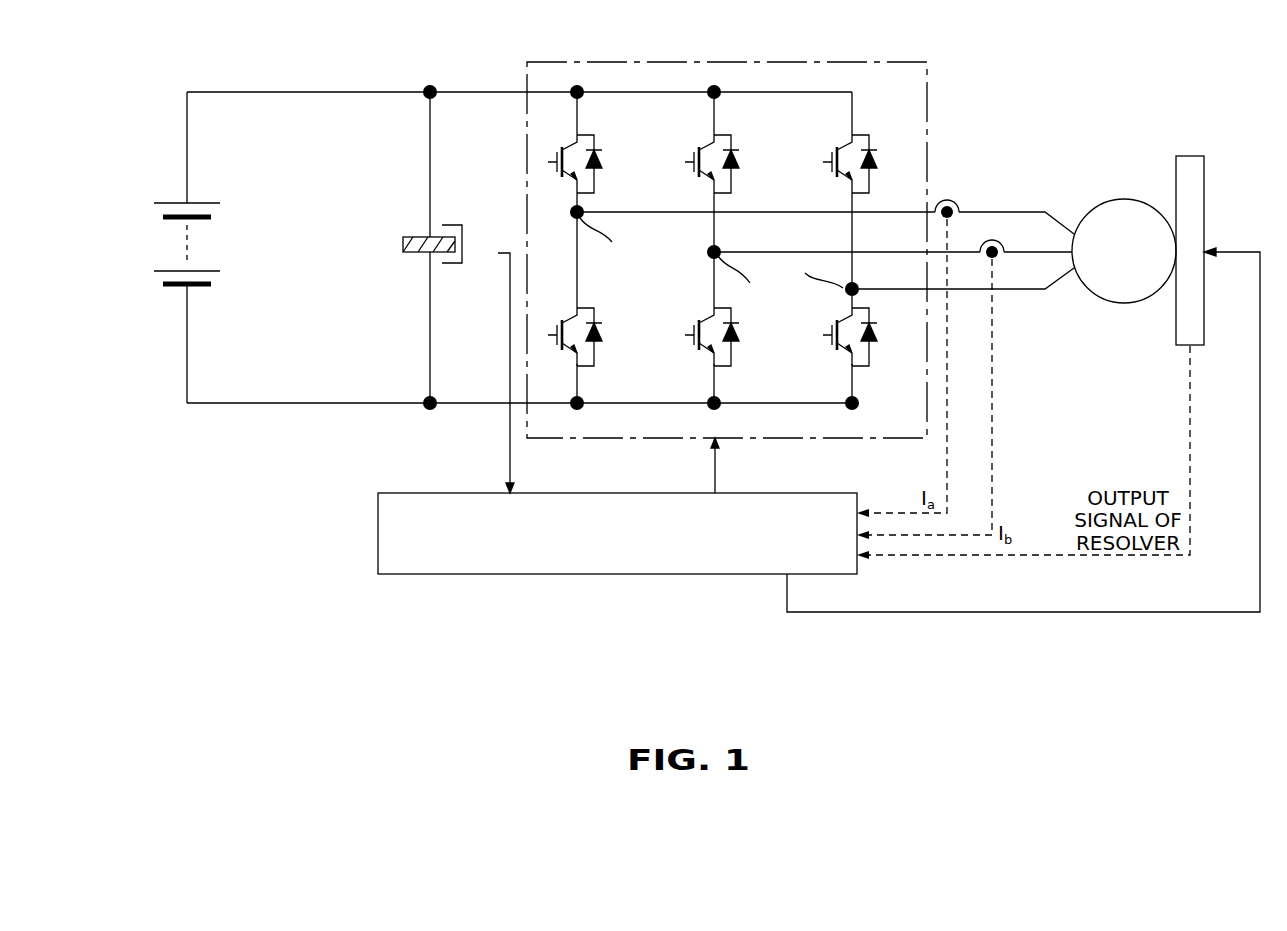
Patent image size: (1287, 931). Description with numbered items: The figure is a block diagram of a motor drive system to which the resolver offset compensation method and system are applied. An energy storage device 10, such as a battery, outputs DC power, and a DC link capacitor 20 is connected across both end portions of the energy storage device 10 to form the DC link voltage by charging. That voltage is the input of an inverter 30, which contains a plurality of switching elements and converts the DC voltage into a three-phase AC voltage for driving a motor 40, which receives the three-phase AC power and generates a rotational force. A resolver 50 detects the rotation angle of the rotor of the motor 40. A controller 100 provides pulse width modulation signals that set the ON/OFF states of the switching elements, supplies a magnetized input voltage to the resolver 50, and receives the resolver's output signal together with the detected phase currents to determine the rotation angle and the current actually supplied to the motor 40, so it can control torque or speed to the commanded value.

The energy storage device 10 is at (172, 288).
The DC link capacitor 20 is at (410, 236).
The inverter 30 is at (728, 62).
The motor 40 is at (1123, 198).
The resolver 50 is at (1190, 156).
The controller 100 is at (618, 577).